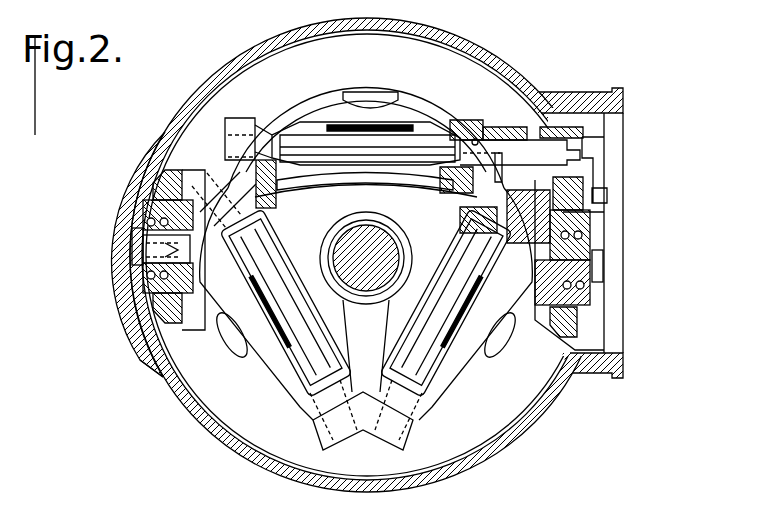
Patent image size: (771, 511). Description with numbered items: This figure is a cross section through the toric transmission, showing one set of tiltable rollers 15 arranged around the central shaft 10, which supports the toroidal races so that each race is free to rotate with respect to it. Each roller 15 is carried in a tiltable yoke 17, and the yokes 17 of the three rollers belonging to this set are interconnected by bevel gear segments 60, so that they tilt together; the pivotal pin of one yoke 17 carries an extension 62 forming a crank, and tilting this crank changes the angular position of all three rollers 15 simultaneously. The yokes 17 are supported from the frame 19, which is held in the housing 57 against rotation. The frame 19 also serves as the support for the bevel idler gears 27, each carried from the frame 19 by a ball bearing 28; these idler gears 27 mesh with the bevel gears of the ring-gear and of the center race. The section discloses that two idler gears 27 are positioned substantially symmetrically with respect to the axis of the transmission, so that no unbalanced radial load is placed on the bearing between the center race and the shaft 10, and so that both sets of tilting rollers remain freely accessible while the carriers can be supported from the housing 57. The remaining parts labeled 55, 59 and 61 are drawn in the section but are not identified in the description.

The shaft 10 is at (380, 293).
The tiltable rollers 15 is at (298, 375).
The tiltable yoke 17 is at (265, 355).
The frame 19 is at (193, 347).
The bevel idler gear 27 is at (150, 312).
The ball bearing 28 is at (145, 281).
The housing 55 is at (210, 427).
The housing 57 is at (118, 245).
The cover plate 59 is at (605, 127).
The bevel gear segments 60 is at (255, 178).
The spacer 61 is at (578, 212).
The extension 62 is at (598, 192).